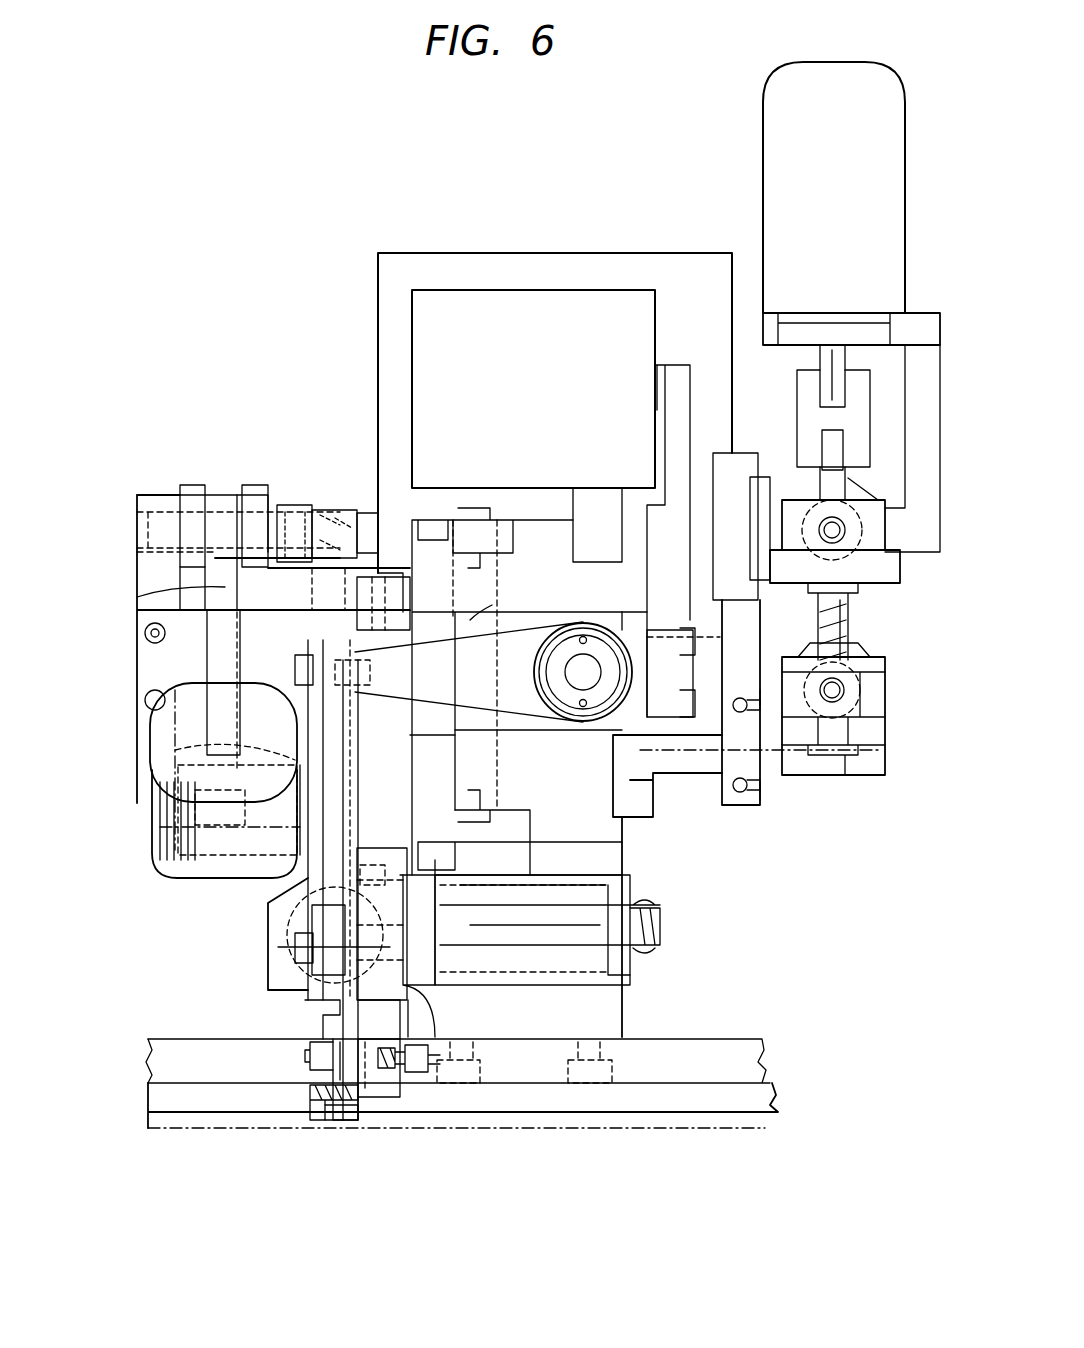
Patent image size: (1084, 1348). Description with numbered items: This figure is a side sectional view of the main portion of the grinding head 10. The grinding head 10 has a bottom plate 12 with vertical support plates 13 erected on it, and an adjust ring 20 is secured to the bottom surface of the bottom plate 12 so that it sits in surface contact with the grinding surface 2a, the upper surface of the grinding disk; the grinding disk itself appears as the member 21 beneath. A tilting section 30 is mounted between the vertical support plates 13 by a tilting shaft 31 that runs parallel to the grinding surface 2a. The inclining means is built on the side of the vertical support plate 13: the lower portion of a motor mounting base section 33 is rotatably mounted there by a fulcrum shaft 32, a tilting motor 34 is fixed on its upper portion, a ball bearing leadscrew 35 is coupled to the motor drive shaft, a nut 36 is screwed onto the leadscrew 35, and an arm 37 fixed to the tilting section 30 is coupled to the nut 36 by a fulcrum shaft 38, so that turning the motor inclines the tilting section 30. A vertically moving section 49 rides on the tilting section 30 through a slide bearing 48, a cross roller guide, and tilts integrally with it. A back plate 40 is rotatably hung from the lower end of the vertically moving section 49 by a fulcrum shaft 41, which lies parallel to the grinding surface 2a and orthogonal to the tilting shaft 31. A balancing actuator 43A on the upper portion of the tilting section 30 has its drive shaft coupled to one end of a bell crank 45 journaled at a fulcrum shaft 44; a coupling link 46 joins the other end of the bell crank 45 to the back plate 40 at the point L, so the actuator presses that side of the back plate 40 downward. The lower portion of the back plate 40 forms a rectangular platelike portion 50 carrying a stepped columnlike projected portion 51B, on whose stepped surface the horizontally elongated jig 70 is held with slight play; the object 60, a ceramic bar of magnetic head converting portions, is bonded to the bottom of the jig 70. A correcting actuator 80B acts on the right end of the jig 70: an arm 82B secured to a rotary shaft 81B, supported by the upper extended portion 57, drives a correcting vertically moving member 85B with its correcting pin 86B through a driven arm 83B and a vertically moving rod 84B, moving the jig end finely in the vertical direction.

The grinding head 10 is at (375, 313).
The bottom plate 12 is at (720, 1049).
The vertical support plate 13 is at (520, 252).
The adjust ring 20 is at (766, 1102).
The guide rail 21 is at (735, 1112).
The grinding surface 2a is at (712, 1127).
The tilting section 30 is at (628, 826).
The tilting shaft 31 is at (292, 923).
The fulcrum shaft 32 is at (820, 517).
The motor mounting base section 33 is at (916, 314).
The tilting motor 34 is at (770, 145).
The ball bearing leadscrew 35 is at (848, 626).
The nut 36 is at (878, 703).
The arm 37 is at (688, 761).
The fulcrum shaft 38 is at (848, 690).
The back plate 40 is at (415, 977).
The fulcrum shaft 41 is at (664, 931).
The balancing actuator 43A is at (445, 290).
The fulcrum shaft 44 is at (582, 674).
The bell crank 45 is at (519, 640).
The coupling link 46 is at (312, 815).
The slide bearing 48 is at (494, 607).
The vertically moving section 49 is at (444, 778).
The rectangular platelike portion 50 is at (415, 1118).
The stepped columnlike projected portion 51B is at (310, 1058).
The upper extended portion 57 is at (396, 573).
The object 60 is at (347, 1120).
The horizontally elongated jig 70 is at (330, 1100).
The correcting actuator 80B is at (263, 697).
The rotary shaft 81B is at (215, 500).
The arm 82B is at (225, 592).
The driven arm 83B is at (292, 505).
The vertically moving rod 84B is at (310, 990).
The correcting vertically moving member 85B is at (375, 1110).
The correcting pin 86B is at (308, 1095).
The point L is at (266, 962).